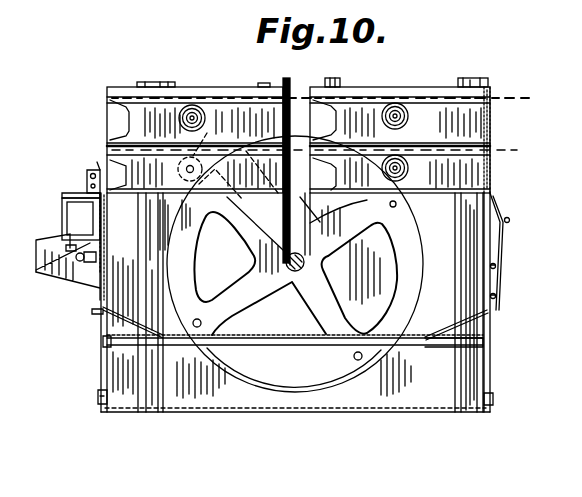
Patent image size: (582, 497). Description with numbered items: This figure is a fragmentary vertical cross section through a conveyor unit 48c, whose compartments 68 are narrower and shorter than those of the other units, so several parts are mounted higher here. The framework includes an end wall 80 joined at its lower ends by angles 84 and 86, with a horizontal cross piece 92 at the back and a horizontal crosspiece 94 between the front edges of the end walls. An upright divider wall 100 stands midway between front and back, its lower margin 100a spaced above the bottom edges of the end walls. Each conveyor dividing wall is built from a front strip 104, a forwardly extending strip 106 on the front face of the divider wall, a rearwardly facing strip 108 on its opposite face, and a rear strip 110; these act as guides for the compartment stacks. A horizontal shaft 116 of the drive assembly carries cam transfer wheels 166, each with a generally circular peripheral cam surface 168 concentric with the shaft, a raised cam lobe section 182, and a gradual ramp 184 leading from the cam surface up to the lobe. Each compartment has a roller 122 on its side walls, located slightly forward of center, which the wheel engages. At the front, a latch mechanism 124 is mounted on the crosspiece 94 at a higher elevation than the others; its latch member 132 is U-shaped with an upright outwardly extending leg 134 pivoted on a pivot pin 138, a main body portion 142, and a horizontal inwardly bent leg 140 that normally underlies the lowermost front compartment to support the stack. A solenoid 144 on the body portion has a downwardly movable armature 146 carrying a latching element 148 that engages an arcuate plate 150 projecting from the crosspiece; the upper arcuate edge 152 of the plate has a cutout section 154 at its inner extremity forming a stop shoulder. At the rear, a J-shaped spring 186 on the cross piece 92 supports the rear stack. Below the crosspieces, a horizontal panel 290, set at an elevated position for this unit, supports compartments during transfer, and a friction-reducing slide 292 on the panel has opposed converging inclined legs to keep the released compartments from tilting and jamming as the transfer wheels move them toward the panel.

The compartments 68 is at (407, 88).
The conveyor unit 48c is at (491, 124).
The end wall 80 is at (298, 413).
The angle 84 is at (104, 413).
The angle 86 is at (490, 413).
The horizontal cross piece 92 is at (488, 312).
The horizontal crosspiece 94 is at (104, 296).
The divider wall 100 is at (288, 85).
The lower margin 100a is at (269, 308).
The front strip 104 is at (144, 83).
The forwardly extending strip 106 is at (264, 86).
The rearwardly facing strip 108 is at (332, 79).
The rear strip 110 is at (478, 80).
The horizontal shaft 116 is at (306, 262).
The roller 122 is at (201, 144).
The latch mechanism 124 is at (69, 194).
The latch member 132 is at (110, 228).
The leg 134 is at (95, 168).
The pivot pin 138 is at (88, 174).
The leg 140 is at (104, 222).
The main body portion 142 is at (107, 258).
The solenoid 144 is at (63, 205).
The armature 146 is at (78, 262).
The latching element 148 is at (85, 265).
The arcuate plate 150 is at (38, 255).
The upper arcuate edge 152 is at (52, 240).
The cutout section 154 is at (96, 312).
The cam transfer wheel 166 is at (414, 231).
The peripheral cam surface 168 is at (418, 248).
The cam lobe section 182 is at (183, 200).
The ramp 184 is at (190, 309).
The J-shaped spring 186 is at (509, 220).
The horizontal panel 290 is at (433, 346).
The slide 292 is at (427, 340).